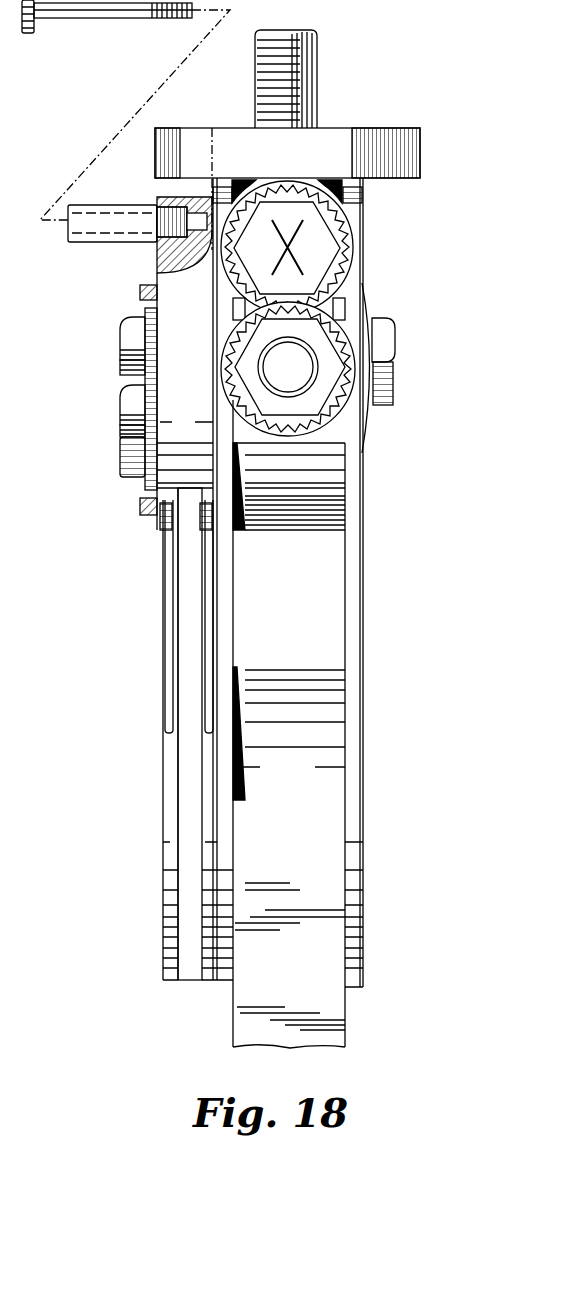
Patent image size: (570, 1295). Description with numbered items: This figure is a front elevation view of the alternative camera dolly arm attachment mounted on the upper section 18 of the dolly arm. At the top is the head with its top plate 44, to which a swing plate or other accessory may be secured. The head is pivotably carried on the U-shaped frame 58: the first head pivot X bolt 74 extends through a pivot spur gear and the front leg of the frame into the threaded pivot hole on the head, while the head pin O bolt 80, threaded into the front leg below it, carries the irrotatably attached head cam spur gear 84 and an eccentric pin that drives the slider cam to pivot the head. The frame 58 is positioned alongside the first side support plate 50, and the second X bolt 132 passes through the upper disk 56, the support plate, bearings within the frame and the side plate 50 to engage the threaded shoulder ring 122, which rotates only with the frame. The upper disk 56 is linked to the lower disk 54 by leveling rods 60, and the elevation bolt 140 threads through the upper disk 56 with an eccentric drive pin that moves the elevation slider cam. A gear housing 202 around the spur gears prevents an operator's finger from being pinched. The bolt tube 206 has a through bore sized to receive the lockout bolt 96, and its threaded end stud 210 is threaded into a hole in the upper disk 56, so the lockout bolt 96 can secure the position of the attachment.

The upper section 18 is at (322, 802).
The top plate 44 is at (422, 137).
The first side support plate 50 is at (353, 557).
The lower disk 54 is at (163, 852).
The upper disk 56 is at (157, 275).
The U-shaped frame 58 is at (310, 473).
The leveling rods 60 is at (187, 606).
The first head pivot X bolt 74 is at (305, 242).
The head pin O bolt 80 is at (312, 345).
The head cam spur gear 84 is at (328, 397).
The lockout bolt 96 is at (88, 13).
The threaded shoulder ring 122 is at (120, 342).
The second X bolt 132 is at (395, 343).
The elevation bolt 140 is at (123, 453).
The gear housing 202 is at (152, 517).
The bolt tube 206 is at (88, 243).
The threaded end stud 210 is at (175, 213).